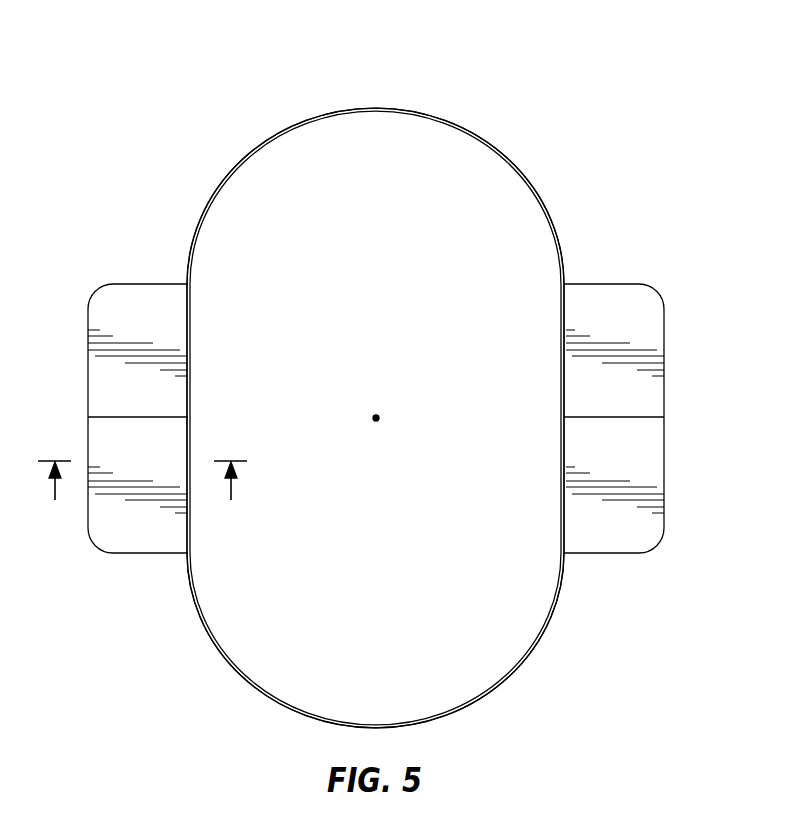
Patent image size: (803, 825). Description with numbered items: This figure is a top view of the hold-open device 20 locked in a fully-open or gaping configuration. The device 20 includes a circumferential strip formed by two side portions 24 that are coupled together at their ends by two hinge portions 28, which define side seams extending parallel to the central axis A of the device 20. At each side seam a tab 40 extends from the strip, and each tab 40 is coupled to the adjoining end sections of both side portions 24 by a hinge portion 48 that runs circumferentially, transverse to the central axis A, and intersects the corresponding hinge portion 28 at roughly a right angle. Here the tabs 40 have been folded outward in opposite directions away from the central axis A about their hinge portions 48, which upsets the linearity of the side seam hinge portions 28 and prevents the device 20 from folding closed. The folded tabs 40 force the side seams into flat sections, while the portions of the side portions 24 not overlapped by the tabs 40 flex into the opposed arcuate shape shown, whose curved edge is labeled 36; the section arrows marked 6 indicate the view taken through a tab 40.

The hold-open device 20 is at (546, 141).
The side portion 24 is at (450, 121).
The rounded end edge of body 36 is at (263, 143).
The tab 40 is at (88, 326).
The hinge portion 28 is at (114, 416).
The hinge portion 48 is at (189, 395).
The section line 6- 6 is at (142, 497).
The central axis A is at (378, 415).